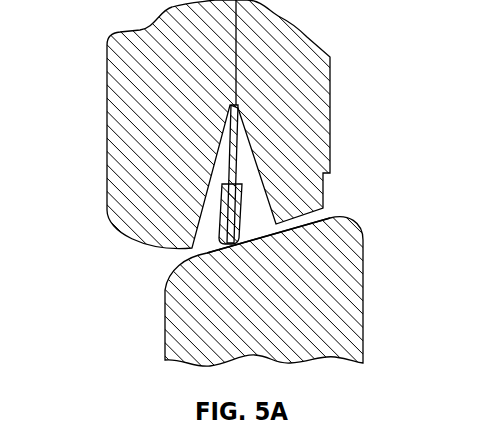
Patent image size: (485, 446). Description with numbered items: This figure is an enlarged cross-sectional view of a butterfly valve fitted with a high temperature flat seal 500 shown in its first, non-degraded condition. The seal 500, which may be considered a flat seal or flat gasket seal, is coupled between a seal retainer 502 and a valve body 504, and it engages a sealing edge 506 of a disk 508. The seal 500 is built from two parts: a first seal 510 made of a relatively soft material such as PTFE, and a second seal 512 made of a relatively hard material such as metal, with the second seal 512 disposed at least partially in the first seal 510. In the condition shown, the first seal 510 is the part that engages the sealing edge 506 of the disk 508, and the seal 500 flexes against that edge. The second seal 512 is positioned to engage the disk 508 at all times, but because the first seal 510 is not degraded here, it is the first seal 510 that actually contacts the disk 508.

The high temperature flat seal 500 is at (213, 220).
The seal retainer 502 is at (138, 103).
The valve body 504 is at (290, 106).
The sealing edge 506 is at (207, 255).
The disk 508 is at (322, 282).
The first seal 510 is at (240, 223).
The second seal 512 is at (237, 167).